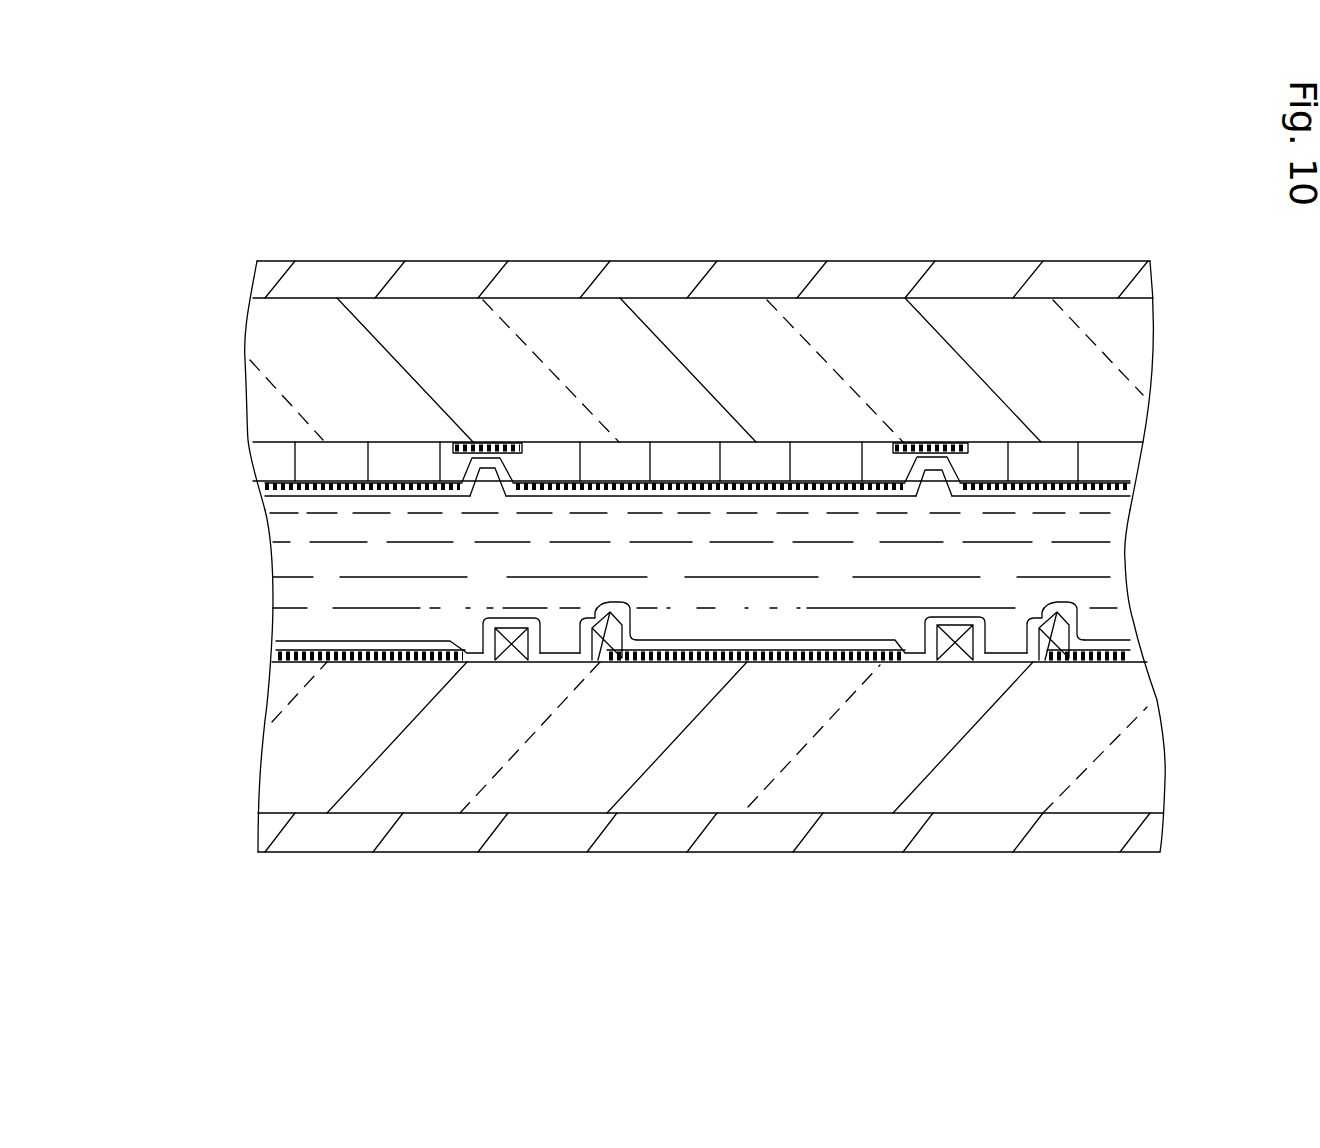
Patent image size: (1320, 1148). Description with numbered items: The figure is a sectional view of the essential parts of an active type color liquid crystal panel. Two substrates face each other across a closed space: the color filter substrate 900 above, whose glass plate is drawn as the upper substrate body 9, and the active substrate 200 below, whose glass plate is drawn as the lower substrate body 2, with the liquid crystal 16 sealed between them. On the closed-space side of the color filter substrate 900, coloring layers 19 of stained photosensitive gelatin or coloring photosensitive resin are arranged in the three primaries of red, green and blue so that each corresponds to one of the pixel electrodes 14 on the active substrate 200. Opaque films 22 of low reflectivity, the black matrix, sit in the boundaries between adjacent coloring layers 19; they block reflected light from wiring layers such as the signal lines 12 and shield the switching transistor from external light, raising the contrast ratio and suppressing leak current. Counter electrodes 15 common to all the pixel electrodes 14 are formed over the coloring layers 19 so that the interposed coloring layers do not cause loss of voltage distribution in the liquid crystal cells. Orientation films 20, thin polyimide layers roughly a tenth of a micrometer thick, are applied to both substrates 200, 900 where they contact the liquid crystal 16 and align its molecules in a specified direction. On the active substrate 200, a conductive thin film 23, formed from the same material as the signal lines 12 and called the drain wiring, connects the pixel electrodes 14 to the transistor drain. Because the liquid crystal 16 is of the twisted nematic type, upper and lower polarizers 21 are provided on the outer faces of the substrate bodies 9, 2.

The color filter substrate 900 is at (1160, 408).
The active substrate 200 is at (1165, 710).
The upper transparent substrate 9 is at (1080, 377).
The lower transparent substrate 2 is at (1000, 797).
The polarizers 21 is at (826, 265).
The coloring layers 19 is at (367, 462).
The opaque films 22 is at (488, 450).
The counter electrodes 15 is at (262, 483).
The orientation films 20 is at (353, 646).
The pixel electrodes 14 is at (837, 660).
The signal lines 12 is at (503, 663).
The conductive thin film 23 is at (600, 655).
The liquid crystal 16 is at (1107, 627).